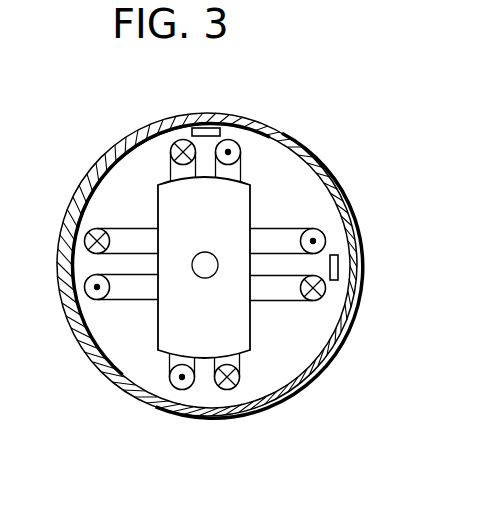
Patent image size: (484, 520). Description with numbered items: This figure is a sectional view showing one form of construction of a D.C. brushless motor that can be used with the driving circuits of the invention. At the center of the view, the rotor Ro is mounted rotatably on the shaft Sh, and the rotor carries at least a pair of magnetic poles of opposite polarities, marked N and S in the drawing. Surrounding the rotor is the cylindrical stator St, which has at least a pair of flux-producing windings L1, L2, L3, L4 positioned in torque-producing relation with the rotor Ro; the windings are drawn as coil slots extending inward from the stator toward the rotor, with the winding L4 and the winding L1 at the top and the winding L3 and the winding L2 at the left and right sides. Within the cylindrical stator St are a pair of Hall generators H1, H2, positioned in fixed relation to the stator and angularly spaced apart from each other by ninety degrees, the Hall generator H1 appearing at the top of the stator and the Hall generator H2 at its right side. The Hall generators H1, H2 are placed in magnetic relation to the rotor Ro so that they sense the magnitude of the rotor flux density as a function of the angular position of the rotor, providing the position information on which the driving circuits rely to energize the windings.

The stator St is at (308, 140).
The rotor Ro is at (170, 330).
The shaft Sh is at (203, 268).
The Hall generator H1 is at (205, 128).
The Hall generator H2 is at (340, 266).
The flux-producing winding L1 is at (229, 141).
The flux-producing winding L2 is at (322, 297).
The flux-producing winding L3 is at (85, 240).
The flux-producing winding L4 is at (180, 141).